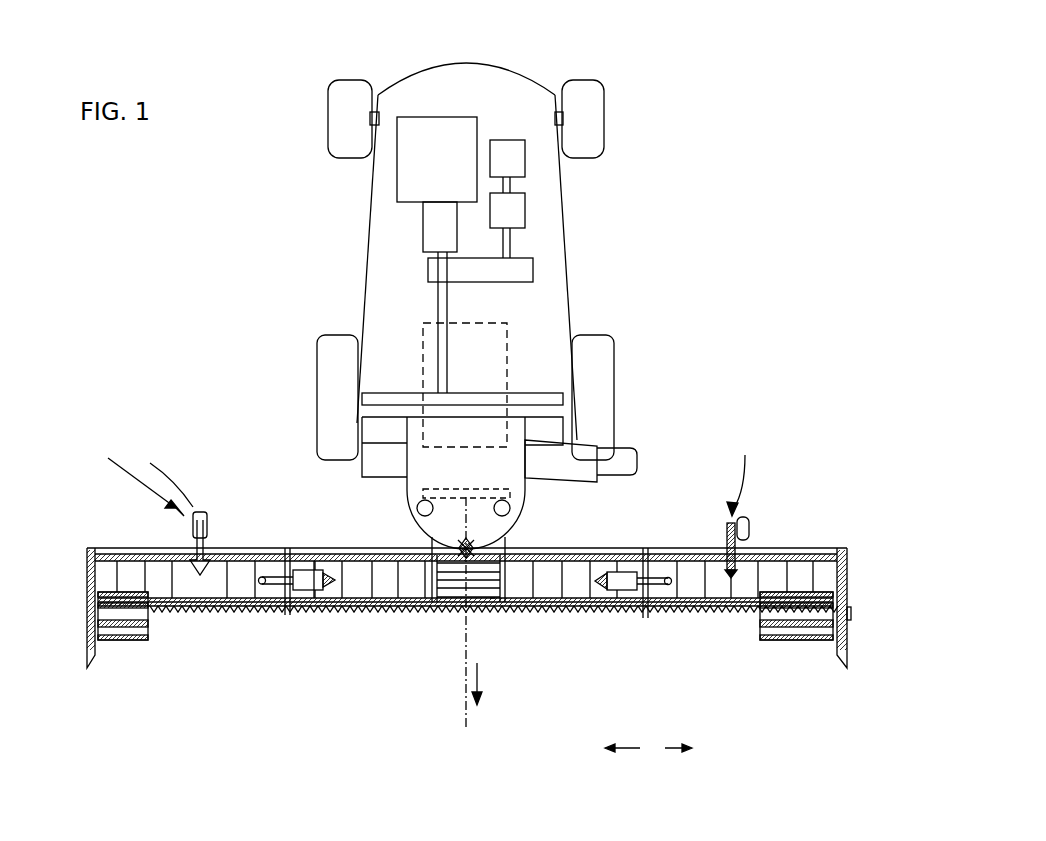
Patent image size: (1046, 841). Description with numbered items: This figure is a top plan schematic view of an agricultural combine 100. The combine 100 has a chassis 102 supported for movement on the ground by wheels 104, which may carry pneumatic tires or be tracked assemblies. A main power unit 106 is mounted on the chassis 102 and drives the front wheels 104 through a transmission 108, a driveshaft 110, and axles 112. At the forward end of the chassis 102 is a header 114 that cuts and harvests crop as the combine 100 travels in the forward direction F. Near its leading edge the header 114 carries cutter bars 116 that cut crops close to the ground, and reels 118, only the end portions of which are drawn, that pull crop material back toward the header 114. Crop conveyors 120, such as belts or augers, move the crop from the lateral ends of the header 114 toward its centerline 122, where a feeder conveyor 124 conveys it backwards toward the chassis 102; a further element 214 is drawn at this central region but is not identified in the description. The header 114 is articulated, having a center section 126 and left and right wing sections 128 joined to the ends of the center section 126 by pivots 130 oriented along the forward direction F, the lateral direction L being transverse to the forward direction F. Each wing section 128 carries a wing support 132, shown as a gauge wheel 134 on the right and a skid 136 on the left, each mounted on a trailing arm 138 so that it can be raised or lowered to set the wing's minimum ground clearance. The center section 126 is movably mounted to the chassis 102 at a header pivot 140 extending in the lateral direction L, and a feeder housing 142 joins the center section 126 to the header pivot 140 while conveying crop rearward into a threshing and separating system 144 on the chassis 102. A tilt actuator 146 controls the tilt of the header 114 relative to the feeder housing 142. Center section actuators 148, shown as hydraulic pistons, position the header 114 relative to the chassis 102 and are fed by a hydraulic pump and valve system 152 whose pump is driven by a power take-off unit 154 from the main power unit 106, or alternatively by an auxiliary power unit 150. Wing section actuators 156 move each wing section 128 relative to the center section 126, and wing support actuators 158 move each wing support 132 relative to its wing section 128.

The agricultural combine 100 is at (660, 336).
The chassis 102 is at (390, 325).
The wheels 104 is at (597, 113).
The main power unit 106 is at (430, 133).
The transmission 108 is at (438, 233).
The driveshaft 110 is at (436, 307).
The axles 112 is at (500, 392).
The header 114 is at (86, 565).
The cutter bars 116 is at (162, 613).
The reels 118 is at (120, 643).
The crop conveyors 120 is at (238, 582).
The centerline 122 is at (463, 693).
The feeder conveyor 124 is at (460, 580).
The center section 126 is at (372, 547).
The wing sections 128 is at (170, 550).
The pivot 130 is at (288, 547).
The wing support 132 is at (414, 476).
The gauge wheels 134 is at (743, 515).
The skids 136 is at (161, 476).
The trailing arm 138 is at (207, 533).
The header pivot 140 is at (453, 483).
The feeder housing 142 is at (508, 543).
The threshing and separating system 144 is at (513, 333).
The tilt actuator 146 is at (462, 556).
The center section actuators 148 is at (425, 505).
The auxiliary power unit 150 is at (513, 155).
The hydraulic pump and valve system 152 is at (517, 210).
The power take-off unit 154 is at (527, 271).
The wing section actuators 156 is at (304, 590).
The wing support actuators 158 is at (203, 543).
The center section pivot 214 is at (485, 580).
The forward direction F is at (477, 677).
The lateral direction L is at (648, 749).